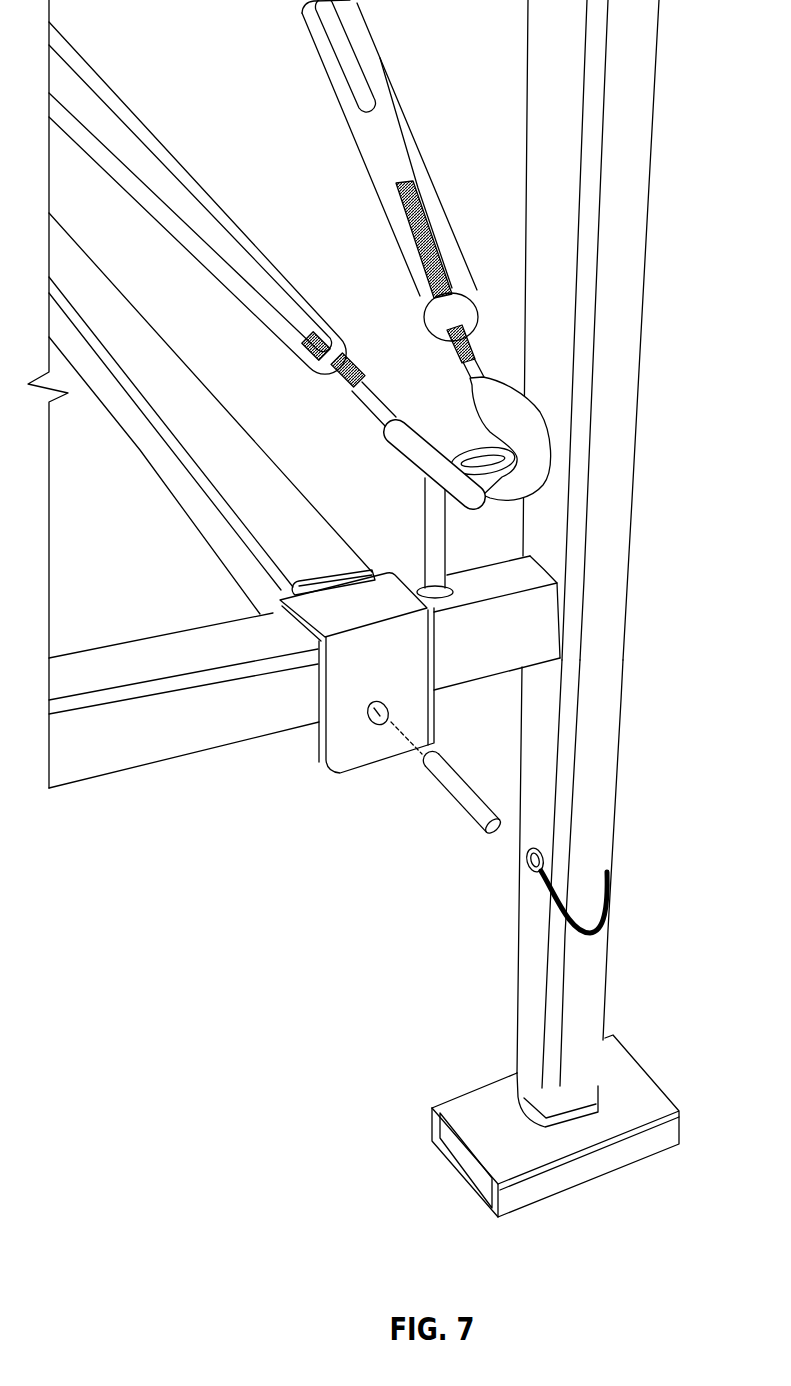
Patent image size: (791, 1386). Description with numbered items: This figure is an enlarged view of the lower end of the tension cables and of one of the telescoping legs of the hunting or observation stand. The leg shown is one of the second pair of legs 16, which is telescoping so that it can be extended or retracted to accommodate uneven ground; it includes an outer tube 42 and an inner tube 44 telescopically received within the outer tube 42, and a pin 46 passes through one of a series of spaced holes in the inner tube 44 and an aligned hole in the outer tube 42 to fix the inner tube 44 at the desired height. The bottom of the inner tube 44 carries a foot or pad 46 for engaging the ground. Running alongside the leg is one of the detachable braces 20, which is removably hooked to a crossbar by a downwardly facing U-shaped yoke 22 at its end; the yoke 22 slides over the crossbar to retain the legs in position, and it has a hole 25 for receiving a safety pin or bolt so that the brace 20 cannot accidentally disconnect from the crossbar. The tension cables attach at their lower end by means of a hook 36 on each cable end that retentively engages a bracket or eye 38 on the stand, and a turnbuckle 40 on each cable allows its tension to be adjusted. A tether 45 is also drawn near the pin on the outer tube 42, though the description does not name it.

The second pair of legs 16 is at (627, 298).
The detachable brace 20 is at (258, 477).
The U-shaped yoke 22 is at (413, 697).
The hole 25 is at (377, 727).
The hook 36 is at (417, 447).
The bracket or eye 38 is at (437, 518).
The turnbuckle 40 is at (345, 130).
The outer tube 42 is at (597, 823).
The inner tube 44 is at (580, 1100).
The tether cable 45 is at (523, 867).
The foot or pad 46 is at (613, 1157).